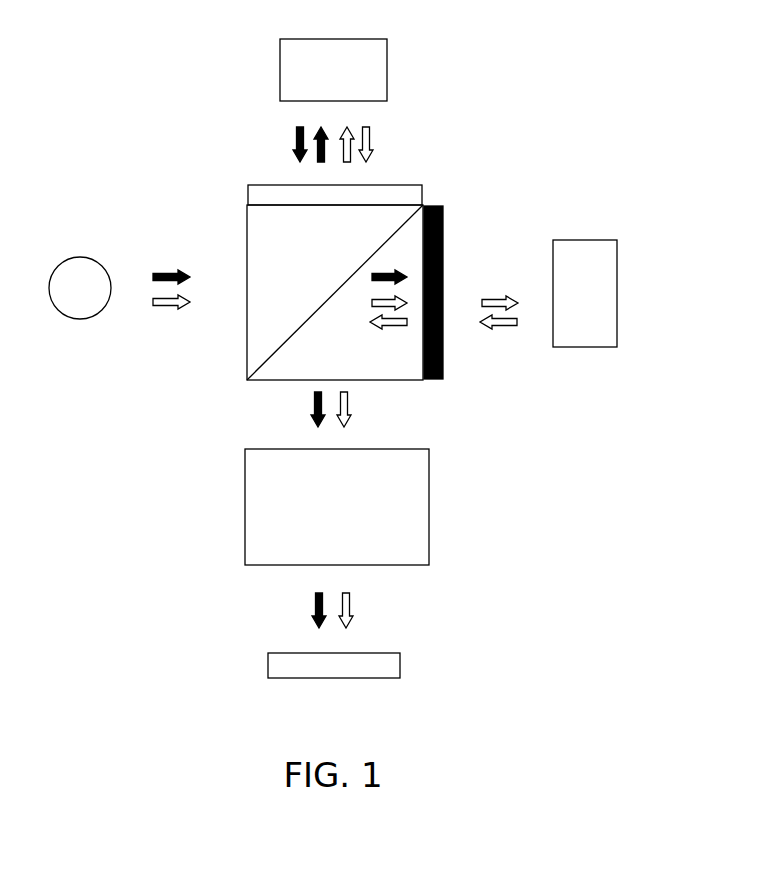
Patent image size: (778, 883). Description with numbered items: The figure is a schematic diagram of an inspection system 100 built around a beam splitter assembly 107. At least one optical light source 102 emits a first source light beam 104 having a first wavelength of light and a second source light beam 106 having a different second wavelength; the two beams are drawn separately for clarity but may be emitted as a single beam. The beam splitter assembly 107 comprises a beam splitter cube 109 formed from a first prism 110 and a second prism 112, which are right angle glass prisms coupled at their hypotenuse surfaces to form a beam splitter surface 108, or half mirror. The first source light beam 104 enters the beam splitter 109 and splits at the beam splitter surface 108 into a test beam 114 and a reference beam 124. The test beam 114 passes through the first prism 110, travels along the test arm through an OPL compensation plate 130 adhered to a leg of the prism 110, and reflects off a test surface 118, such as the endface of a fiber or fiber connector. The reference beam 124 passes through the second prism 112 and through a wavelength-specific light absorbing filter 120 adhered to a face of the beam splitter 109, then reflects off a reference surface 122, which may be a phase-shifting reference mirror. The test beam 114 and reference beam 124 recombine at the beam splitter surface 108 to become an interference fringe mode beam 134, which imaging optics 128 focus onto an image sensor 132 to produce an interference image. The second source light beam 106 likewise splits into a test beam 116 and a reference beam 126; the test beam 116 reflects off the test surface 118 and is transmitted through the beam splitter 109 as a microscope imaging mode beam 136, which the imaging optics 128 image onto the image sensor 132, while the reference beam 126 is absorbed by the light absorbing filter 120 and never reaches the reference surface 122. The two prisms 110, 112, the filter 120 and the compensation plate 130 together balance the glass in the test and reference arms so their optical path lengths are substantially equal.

The inspection system 100 is at (140, 108).
The optical light source 102 is at (65, 298).
The first source light beam 104 is at (167, 306).
The second source light beam 106 is at (167, 272).
The beam splitter assembly 107 is at (453, 191).
The beam splitter surface 108 is at (274, 350).
The beam splitter cube 109 is at (245, 238).
The first prism 110 is at (280, 263).
The second prism 112 is at (332, 353).
The test beam 114 is at (350, 138).
The test beam 116 is at (321, 138).
The test surface 118 is at (318, 80).
The wavelength-specific light absorbing filter 120 is at (443, 372).
The reference surface 122 is at (570, 302).
The reference beam 124 is at (384, 322).
The reference beam 126 is at (390, 270).
The imaging optics 128 is at (322, 520).
The OPL compensation plate 130 is at (323, 203).
The image sensor 132 is at (319, 676).
The interference fringe mode beam 134 is at (350, 403).
The microscope imaging mode beam 136 is at (313, 407).